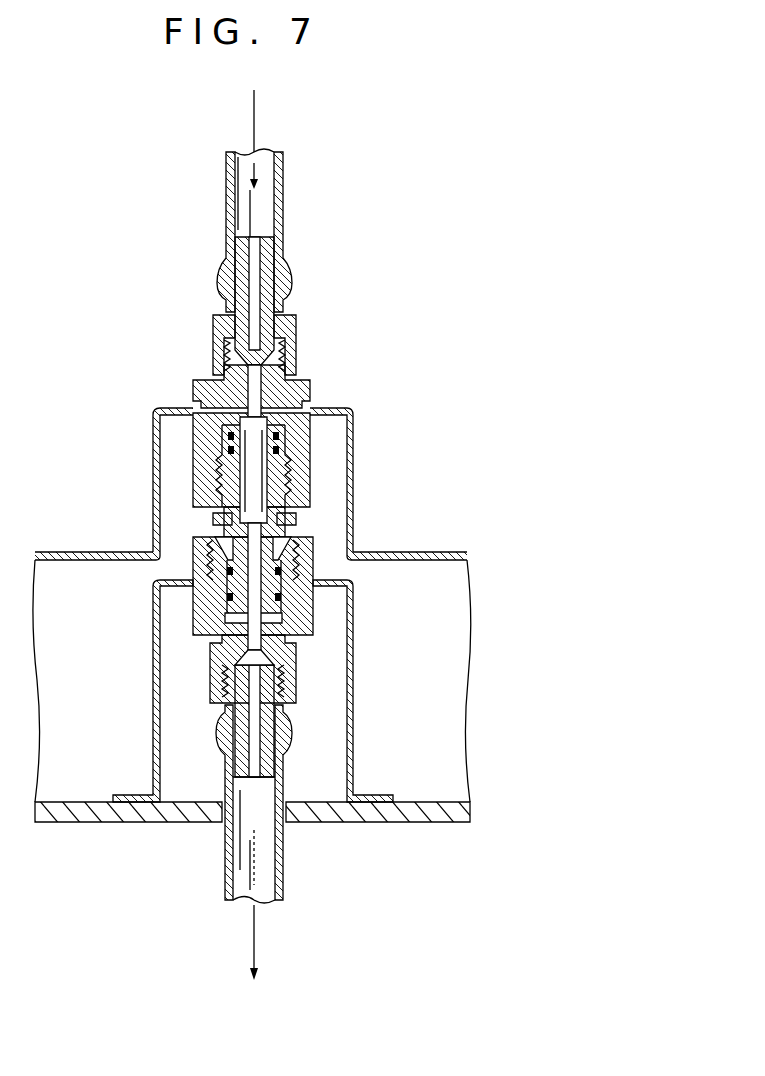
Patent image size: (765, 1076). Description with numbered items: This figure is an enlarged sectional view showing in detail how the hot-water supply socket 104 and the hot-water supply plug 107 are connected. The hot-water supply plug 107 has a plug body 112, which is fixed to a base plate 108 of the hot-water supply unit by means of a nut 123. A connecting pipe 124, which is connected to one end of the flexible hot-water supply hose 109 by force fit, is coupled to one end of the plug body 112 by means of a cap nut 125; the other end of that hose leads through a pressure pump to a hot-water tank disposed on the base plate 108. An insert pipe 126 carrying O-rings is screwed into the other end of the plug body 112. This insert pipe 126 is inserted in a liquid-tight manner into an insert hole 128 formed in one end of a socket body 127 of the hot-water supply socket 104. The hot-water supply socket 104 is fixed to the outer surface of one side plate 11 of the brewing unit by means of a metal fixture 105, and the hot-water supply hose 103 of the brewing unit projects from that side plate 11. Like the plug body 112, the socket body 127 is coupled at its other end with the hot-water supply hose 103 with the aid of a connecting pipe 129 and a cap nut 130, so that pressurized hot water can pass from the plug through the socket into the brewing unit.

The hot-water supply hose 109 is at (285, 183).
The connecting pipe 124 is at (289, 298).
The cap nut 125 is at (294, 330).
The hot-water supply plug 107 is at (331, 389).
The nut 123 is at (193, 396).
The plug body 112 is at (307, 454).
The insert pipe 126 is at (217, 530).
The insert hole 128 is at (287, 538).
The base plate 108 is at (438, 552).
The hot-water supply socket 104 is at (320, 606).
The socket body 127 is at (298, 634).
The metal fixture 105 is at (354, 702).
The cap nut 130 is at (216, 704).
The connecting pipe 129 is at (282, 731).
The hot-water supply hose 103 is at (285, 861).
The side plate 11 is at (428, 823).